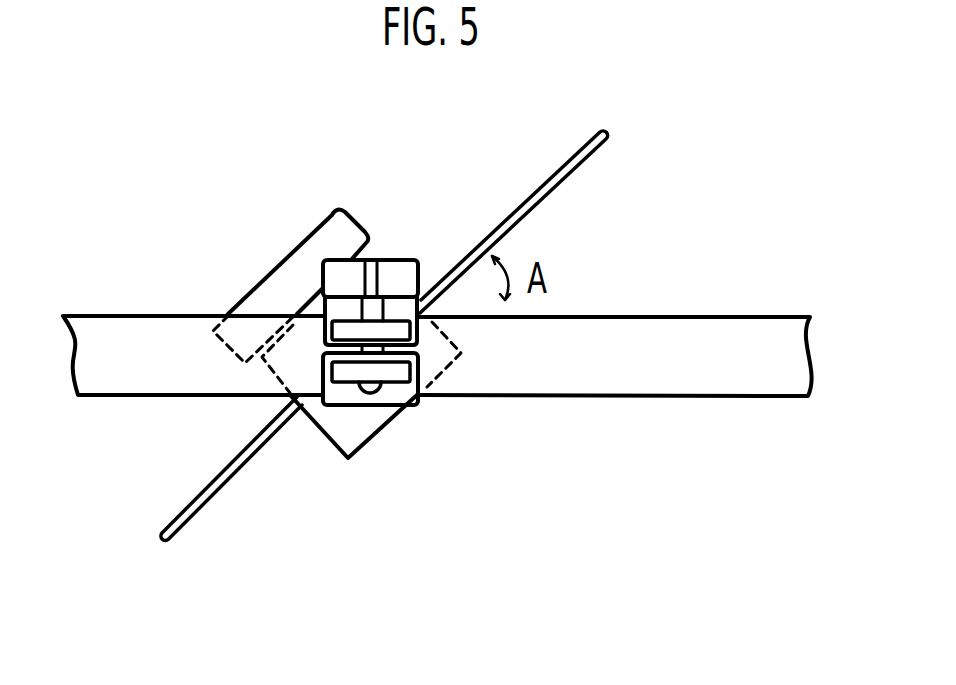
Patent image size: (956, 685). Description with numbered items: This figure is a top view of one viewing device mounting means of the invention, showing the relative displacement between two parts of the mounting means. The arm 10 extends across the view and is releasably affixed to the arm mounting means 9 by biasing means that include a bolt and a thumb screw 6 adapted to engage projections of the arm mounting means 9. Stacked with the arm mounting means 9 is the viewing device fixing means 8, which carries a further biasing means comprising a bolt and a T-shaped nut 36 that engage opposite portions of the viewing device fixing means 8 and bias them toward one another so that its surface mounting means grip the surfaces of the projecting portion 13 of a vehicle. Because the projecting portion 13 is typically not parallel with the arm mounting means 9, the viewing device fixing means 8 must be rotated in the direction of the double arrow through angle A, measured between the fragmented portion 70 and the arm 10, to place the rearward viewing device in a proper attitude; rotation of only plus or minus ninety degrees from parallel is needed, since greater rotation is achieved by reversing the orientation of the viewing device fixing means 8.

The thumb screw 6 is at (395, 273).
The viewing device fixing means 8 is at (348, 432).
The arm mounting means 9 is at (407, 402).
The arm 10 is at (638, 375).
The projecting portion 13 is at (560, 175).
The T-shaped nut 36 is at (295, 272).
The fragmented portion 70 is at (250, 458).